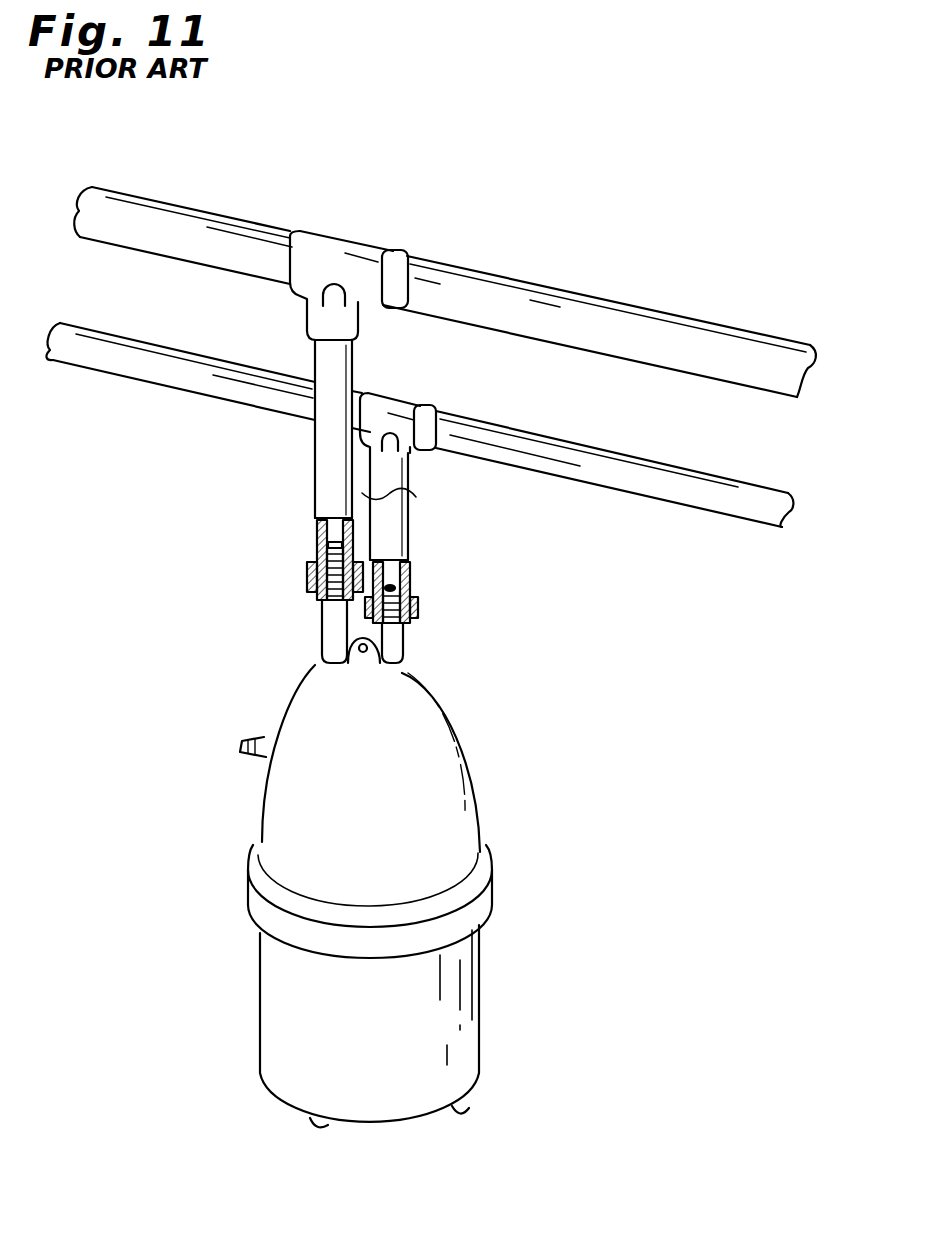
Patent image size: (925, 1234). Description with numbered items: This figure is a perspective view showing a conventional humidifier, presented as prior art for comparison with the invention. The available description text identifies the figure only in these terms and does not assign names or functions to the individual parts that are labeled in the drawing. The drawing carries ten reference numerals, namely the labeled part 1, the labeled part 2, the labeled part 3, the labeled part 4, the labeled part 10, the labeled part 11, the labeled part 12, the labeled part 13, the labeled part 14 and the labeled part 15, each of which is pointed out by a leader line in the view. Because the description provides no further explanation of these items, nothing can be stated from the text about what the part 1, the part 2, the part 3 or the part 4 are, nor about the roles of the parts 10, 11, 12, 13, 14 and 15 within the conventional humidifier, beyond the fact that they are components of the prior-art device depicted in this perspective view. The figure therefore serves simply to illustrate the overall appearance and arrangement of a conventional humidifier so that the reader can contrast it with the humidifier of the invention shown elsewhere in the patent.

The container (bottle) 1 is at (447, 765).
The feed tube 2 is at (398, 637).
The discharge tube 3 is at (330, 618).
The nozzle 4 is at (262, 738).
The first pipe 10 is at (553, 298).
The second pipe 11 is at (538, 450).
The branch pipe 12 is at (322, 463).
The branch pipe 13 is at (395, 525).
The fitting 14 is at (307, 575).
The fitting 15 is at (418, 602).